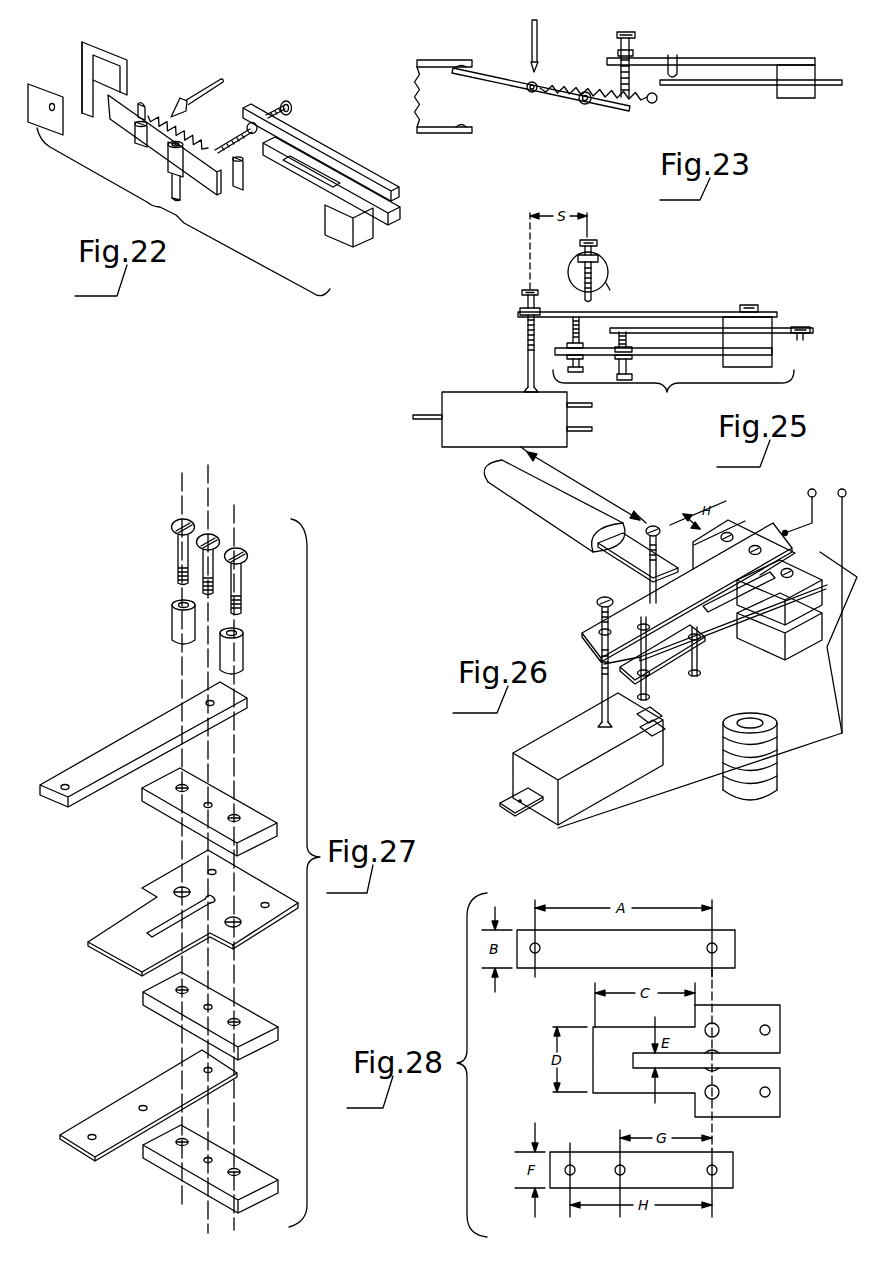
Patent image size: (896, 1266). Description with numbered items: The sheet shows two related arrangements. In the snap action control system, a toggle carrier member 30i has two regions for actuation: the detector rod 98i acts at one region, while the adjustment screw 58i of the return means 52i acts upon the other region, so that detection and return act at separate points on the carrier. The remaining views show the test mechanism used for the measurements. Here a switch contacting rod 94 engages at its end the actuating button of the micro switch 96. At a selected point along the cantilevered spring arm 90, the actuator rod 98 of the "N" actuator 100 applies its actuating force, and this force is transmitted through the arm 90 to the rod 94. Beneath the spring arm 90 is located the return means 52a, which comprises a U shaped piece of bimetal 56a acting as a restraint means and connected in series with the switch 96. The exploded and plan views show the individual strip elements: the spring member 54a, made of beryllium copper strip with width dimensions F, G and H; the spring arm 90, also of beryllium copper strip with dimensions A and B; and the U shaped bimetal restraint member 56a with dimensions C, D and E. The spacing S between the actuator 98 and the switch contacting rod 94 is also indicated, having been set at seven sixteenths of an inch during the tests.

In FIG. 22, the toggle carrier member 30i is at (153, 146).
In FIG. 23, the toggle carrier member 30i is at (508, 86).
In FIG. 22, the return means 52i is at (408, 181).
In FIG. 23, the return means 52i is at (611, 38).
In FIG. 22, the adjustment screw 58i is at (227, 128).
In FIG. 23, the adjustment screw 58i is at (617, 76).
In FIG. 22, the detector rod 98i is at (197, 86).
In FIG. 23, the detector rod 98i is at (530, 41).
In FIG. 25, the return means 52a is at (673, 400).
In FIG. 25, the cantilevered spring arm 90 is at (667, 313).
In FIG. 27, the cantilevered spring arm 90 is at (108, 753).
In FIG. 25, the U shaped bimetal restraint member 56a is at (687, 330).
In FIG. 26, the U shaped bimetal restraint member 56a is at (727, 623).
In FIG. 27, the U shaped bimetal restraint member 56a is at (107, 948).
In FIG. 26, the spring member 54a is at (668, 682).
In FIG. 27, the spring member 54a is at (115, 1108).
In FIG. 25, the switch contacting rod 94 is at (523, 345).
In FIG. 26, the switch contacting rod 94 is at (602, 697).
In FIG. 25, the micro switch 96 is at (478, 438).
In FIG. 26, the micro switch 96 is at (540, 744).
In FIG. 25, the actuator rod 98 is at (600, 287).
In FIG. 26, the actuator rod 98 is at (648, 584).
In FIG. 25, the "N" actuator 100 is at (628, 252).
In FIG. 26, the "N" actuator 100 is at (580, 532).